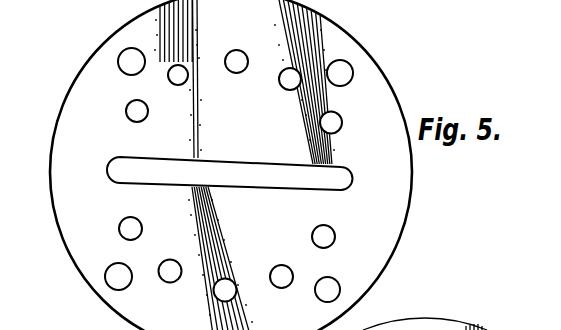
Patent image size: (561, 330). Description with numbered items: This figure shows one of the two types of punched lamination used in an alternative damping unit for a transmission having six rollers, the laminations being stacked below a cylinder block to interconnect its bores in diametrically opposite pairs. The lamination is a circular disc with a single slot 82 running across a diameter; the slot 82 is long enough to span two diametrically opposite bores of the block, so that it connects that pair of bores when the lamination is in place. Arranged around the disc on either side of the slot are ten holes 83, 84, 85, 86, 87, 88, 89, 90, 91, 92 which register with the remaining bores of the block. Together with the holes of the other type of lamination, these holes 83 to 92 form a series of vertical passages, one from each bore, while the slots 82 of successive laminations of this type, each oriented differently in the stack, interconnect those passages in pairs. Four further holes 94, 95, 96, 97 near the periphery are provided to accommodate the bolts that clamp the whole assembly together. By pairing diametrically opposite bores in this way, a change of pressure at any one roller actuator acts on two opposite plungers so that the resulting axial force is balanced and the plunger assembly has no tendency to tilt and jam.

The slot 82 is at (352, 183).
The hole 83 is at (342, 120).
The hole 84 is at (287, 90).
The hole 85 is at (236, 73).
The hole 86 is at (178, 85).
The hole 87 is at (128, 117).
The hole 88 is at (139, 221).
The hole 89 is at (171, 260).
The hole 90 is at (220, 292).
The hole 91 is at (280, 265).
The hole 92 is at (320, 226).
The additional hole 94 is at (353, 74).
The additional hole 95 is at (122, 71).
The additional hole 96 is at (128, 286).
The additional hole 97 is at (320, 299).